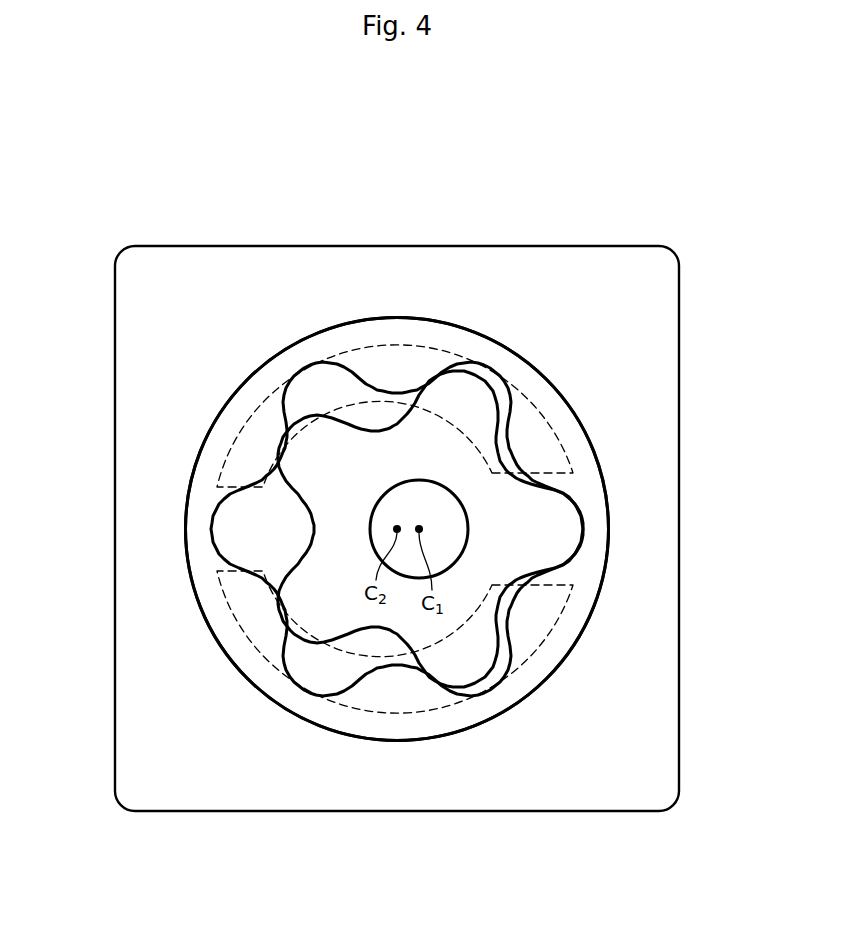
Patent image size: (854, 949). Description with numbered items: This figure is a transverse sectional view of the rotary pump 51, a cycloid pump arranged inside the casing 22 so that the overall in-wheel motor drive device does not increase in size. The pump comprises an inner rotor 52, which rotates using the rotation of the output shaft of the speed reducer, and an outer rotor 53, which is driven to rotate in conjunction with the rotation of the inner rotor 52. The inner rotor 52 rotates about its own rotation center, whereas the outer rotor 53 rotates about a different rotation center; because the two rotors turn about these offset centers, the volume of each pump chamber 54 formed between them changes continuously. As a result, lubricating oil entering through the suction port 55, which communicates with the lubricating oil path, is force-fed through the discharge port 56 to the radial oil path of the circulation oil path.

The casing 22 is at (648, 378).
The rotary pump 51 is at (515, 347).
The inner rotor 52 is at (310, 602).
The outer rotor 53 is at (582, 481).
The pump chamber 54 is at (318, 380).
The suction port 55 is at (395, 690).
The discharge port 56 is at (399, 362).